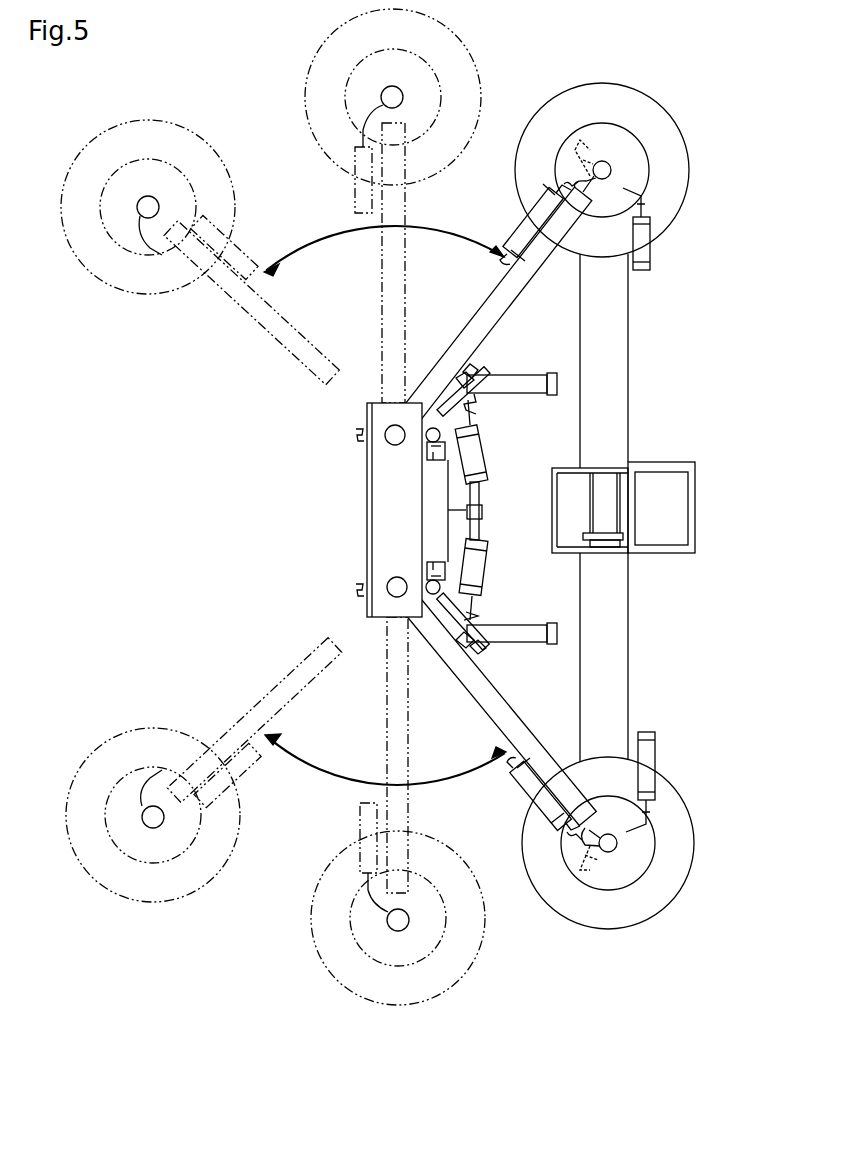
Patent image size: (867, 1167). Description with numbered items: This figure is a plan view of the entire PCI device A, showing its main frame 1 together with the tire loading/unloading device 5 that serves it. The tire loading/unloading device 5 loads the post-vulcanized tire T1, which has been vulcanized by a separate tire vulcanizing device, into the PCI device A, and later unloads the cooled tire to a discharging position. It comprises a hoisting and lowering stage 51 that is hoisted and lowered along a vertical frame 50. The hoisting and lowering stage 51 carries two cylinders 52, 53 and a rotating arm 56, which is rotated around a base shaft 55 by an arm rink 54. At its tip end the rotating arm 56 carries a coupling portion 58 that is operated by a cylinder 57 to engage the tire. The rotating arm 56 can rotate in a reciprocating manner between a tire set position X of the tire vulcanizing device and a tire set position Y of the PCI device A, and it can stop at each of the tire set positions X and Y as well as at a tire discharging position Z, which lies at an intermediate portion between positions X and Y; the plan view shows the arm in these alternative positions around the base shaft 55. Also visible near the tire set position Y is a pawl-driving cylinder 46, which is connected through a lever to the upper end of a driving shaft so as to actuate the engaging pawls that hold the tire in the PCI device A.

The main frame 1 is at (616, 401).
The tire loading/unloading device 5 is at (530, 290).
The pawl-driving cylinder 46 is at (652, 246).
The vertical frame 50 is at (354, 432).
The hoisting and lowering stage 51 is at (382, 526).
The cylinder 52 is at (482, 462).
The cylinder 53 is at (518, 386).
The arm rink 54 is at (446, 404).
The base shaft 55 is at (386, 442).
The rotating arm 56 is at (492, 310).
The cylinder 57 is at (514, 240).
The coupling portion 58 is at (622, 172).
The PCI device A is at (667, 563).
The post-vulcanized tire T1 is at (658, 100).
The tire set position of the tire vulcanizing device X is at (156, 111).
The tire set position of the PCI device Y is at (710, 143).
The tire discharging position Z is at (476, 23).